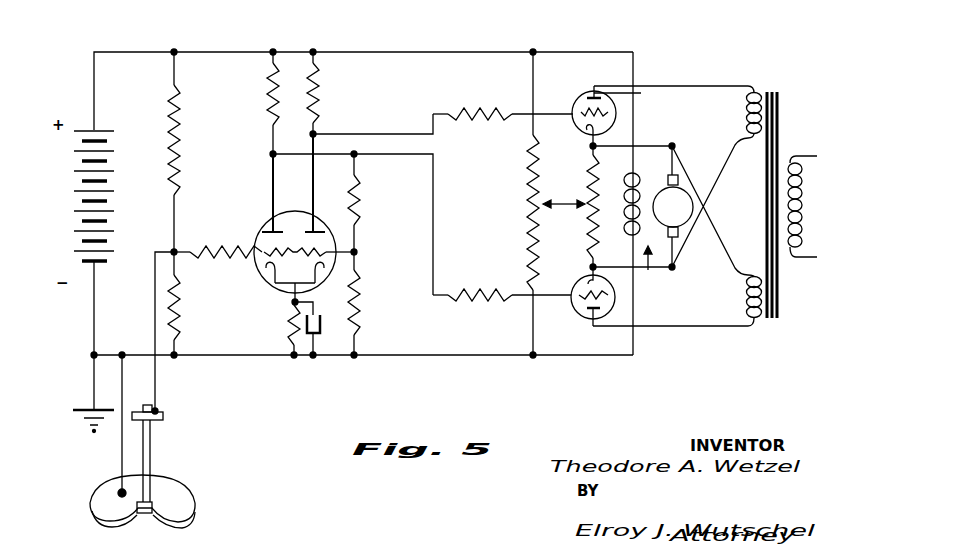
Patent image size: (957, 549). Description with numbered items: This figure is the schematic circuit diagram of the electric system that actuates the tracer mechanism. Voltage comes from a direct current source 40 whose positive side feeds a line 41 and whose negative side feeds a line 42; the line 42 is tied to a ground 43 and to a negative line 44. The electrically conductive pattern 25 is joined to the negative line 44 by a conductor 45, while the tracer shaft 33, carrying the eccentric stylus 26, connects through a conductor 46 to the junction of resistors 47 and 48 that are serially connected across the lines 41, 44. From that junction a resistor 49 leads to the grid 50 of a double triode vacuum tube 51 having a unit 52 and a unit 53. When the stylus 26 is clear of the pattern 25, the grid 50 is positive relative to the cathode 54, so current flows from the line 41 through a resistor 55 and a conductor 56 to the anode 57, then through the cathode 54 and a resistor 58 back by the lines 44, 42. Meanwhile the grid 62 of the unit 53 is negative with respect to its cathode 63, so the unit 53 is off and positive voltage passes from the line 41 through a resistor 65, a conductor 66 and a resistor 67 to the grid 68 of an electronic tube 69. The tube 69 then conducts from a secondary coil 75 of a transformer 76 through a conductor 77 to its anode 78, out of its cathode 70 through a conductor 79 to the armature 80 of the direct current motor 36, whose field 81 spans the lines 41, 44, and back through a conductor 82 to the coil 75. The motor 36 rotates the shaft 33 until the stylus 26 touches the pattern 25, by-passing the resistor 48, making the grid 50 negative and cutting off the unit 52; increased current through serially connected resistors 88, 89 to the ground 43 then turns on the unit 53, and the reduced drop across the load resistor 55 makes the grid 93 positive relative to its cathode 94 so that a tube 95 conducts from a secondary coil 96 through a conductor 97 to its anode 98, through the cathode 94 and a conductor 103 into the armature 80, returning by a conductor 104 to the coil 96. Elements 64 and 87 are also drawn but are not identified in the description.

The line 41 is at (127, 52).
The direct current source 40 is at (110, 146).
The line 42 is at (94, 311).
The ground 43 is at (84, 420).
The negative line 44 is at (228, 358).
The conductor 45 is at (120, 458).
The resistor 47 is at (170, 138).
The conductor 46 is at (153, 307).
The tracer shaft 33 is at (148, 432).
The pattern 25 is at (168, 495).
The stylus 26 is at (134, 511).
The resistor 48 is at (182, 285).
The resistor 49 is at (202, 244).
The resistor 55 is at (272, 82).
The conductor 56 is at (272, 132).
The resistor 65 is at (320, 74).
The conductor 66 is at (368, 105).
The resistor 67 is at (475, 107).
The double triode vacuum tube 51 is at (292, 198).
The anode 57 is at (272, 228).
The second plate 64 is at (326, 238).
The conductor 87 is at (326, 156).
The unit 52 is at (264, 238).
The unit 53 is at (330, 244).
The grid 50 is at (292, 258).
The cathode 54 is at (275, 272).
The grid 62 is at (332, 256).
The resistor 58 is at (290, 326).
The cathode 63 is at (315, 293).
The resistor 88 is at (360, 184).
The resistor 89 is at (360, 312).
The electronic tube 69 is at (572, 94).
The grid 68 is at (588, 98).
The conductor 77 is at (680, 86).
The anode 78 is at (627, 102).
The cathode 70 is at (591, 131).
The conductor 79 is at (638, 147).
The field 81 is at (630, 190).
The armature 80 is at (683, 194).
The conductor 104 is at (705, 230).
The conductor 82 is at (680, 268).
The conductor 103 is at (617, 266).
The direct current motor 36 is at (654, 272).
The cathode 94 is at (588, 277).
The tube 95 is at (570, 303).
The grid 93 is at (589, 310).
The anode 98 is at (605, 318).
The conductor 97 is at (668, 330).
The secondary coil 75 is at (745, 109).
The secondary coil 96 is at (746, 303).
The transformer 76 is at (792, 124).